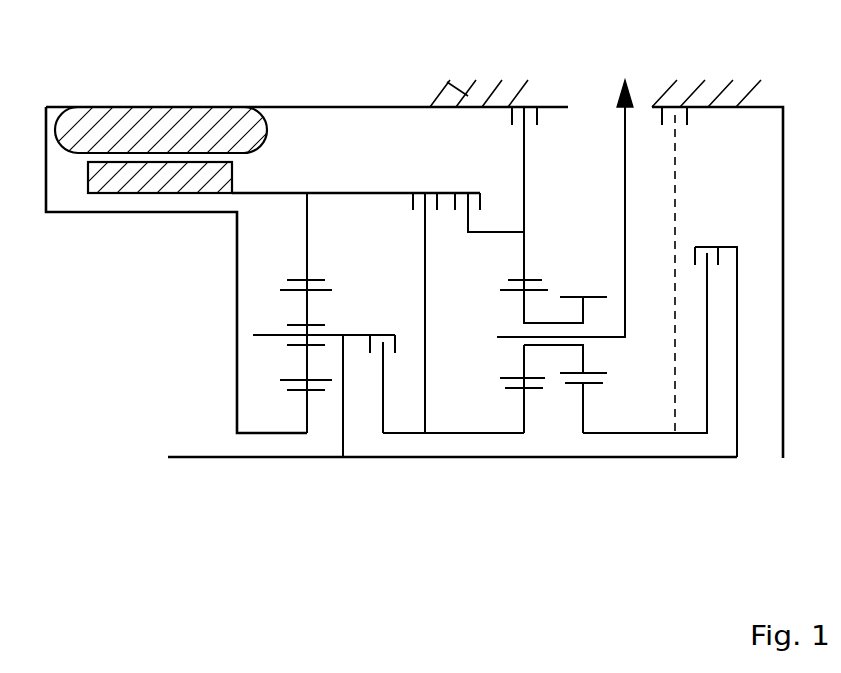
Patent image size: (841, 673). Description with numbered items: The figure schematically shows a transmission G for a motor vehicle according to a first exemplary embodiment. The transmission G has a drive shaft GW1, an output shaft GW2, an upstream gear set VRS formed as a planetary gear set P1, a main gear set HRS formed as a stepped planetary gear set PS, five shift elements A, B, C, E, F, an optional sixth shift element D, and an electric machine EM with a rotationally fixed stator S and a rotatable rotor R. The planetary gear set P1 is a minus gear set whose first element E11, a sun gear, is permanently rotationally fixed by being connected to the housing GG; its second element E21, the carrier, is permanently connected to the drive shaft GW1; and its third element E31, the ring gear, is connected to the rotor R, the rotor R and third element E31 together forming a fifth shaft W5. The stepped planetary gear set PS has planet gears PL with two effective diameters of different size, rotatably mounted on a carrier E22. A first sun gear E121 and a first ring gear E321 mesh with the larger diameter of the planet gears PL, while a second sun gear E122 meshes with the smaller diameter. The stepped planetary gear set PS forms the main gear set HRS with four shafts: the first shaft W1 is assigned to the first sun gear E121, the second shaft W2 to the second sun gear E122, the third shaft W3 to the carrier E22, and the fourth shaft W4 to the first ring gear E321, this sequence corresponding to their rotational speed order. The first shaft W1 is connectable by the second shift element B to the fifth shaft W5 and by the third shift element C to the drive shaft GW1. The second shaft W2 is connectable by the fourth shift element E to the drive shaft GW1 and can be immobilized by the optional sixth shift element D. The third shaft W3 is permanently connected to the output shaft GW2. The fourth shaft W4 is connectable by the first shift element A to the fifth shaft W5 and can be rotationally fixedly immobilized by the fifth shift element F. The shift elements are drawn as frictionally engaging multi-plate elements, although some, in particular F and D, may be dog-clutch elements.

The transmission G is at (148, 432).
The housing GG is at (447, 82).
The electric machine EM is at (170, 107).
The stator S is at (90, 128).
The rotor R is at (115, 173).
The fifth shaft W5 is at (350, 192).
The third element E31 is at (294, 272).
The planetary gear set P1 is at (324, 455).
The upstream gear set VRS is at (303, 471).
The second element E21 is at (265, 341).
The first element E11 is at (318, 395).
The third shift element C is at (377, 357).
The first shaft W1 is at (447, 433).
The second shift element B is at (422, 187).
The first shift element A is at (462, 185).
The first ring gear E321 is at (513, 273).
The fourth shaft W4 is at (521, 167).
The fifth shift element F is at (533, 132).
The output shaft GW2 is at (628, 167).
The third shaft W3 is at (588, 176).
The carrier E22 is at (497, 338).
The first sun gear E121 is at (508, 392).
The stepped planetary gear set PS is at (559, 448).
The main gear set HRS is at (590, 510).
The planet gears PL is at (530, 358).
The second sun gear E122 is at (592, 385).
The second shaft W2 is at (692, 437).
The sixth shift element D is at (683, 133).
The fourth shift element E is at (710, 243).
The drive shaft GW1 is at (193, 457).